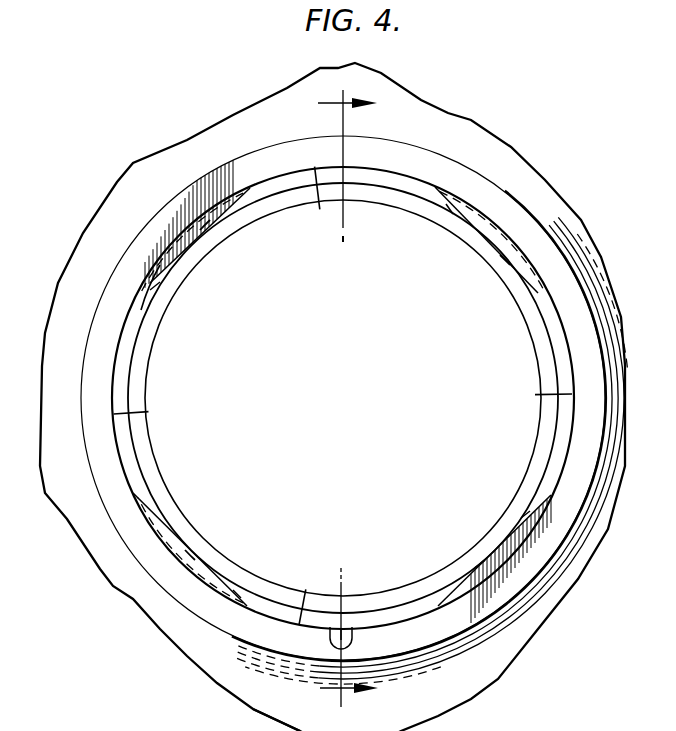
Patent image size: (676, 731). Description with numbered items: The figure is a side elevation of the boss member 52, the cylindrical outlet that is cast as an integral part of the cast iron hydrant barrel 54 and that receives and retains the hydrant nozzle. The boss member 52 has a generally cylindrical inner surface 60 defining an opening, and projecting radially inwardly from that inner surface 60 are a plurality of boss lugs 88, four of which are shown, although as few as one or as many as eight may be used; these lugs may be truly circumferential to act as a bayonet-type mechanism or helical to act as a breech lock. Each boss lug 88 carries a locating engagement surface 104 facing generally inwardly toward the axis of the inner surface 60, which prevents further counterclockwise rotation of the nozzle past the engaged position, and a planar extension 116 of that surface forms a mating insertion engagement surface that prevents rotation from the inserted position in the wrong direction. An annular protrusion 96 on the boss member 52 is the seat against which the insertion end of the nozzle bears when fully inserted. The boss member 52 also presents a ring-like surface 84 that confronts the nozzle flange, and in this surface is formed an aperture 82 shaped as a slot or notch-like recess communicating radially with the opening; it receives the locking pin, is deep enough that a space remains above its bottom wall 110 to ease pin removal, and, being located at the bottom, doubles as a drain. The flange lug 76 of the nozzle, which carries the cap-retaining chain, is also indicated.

The boss member 52 is at (512, 188).
The hydrant barrel 54 is at (415, 126).
The cylindrical inner surface 60 is at (305, 590).
The flange lug 76 is at (236, 720).
The aperture 82 is at (329, 630).
The ring-like surface 84 is at (416, 647).
The boss lugs 88 is at (200, 230).
The annular protrusion 96 is at (146, 345).
The locating engagement surface 104 is at (247, 194).
The bottom wall 110 is at (344, 628).
The planar extensions 116 is at (150, 290).